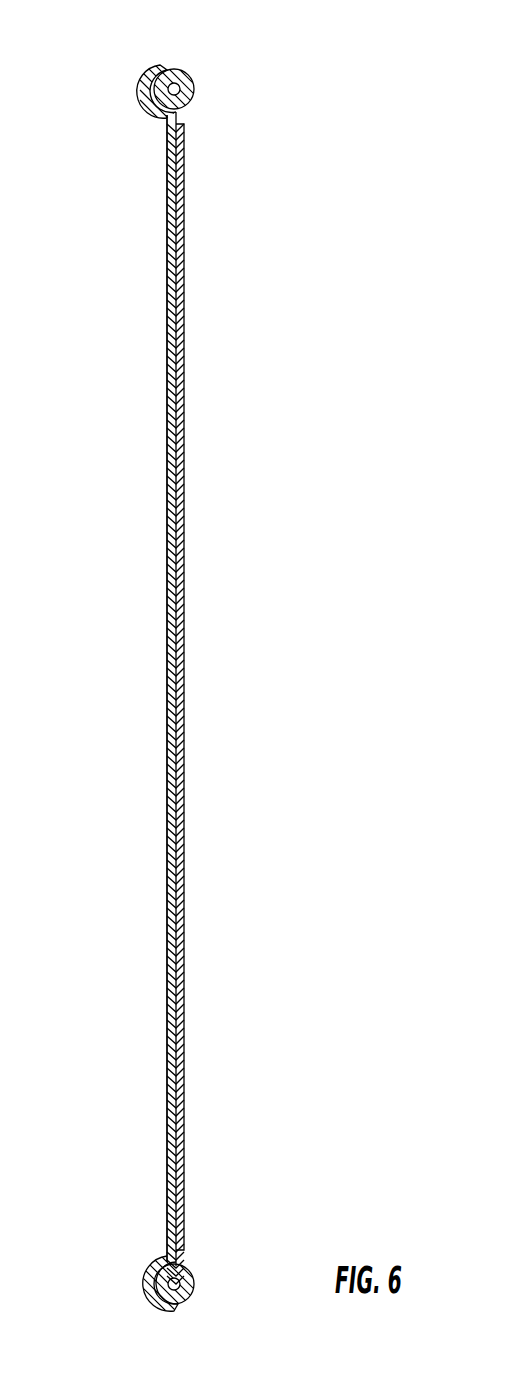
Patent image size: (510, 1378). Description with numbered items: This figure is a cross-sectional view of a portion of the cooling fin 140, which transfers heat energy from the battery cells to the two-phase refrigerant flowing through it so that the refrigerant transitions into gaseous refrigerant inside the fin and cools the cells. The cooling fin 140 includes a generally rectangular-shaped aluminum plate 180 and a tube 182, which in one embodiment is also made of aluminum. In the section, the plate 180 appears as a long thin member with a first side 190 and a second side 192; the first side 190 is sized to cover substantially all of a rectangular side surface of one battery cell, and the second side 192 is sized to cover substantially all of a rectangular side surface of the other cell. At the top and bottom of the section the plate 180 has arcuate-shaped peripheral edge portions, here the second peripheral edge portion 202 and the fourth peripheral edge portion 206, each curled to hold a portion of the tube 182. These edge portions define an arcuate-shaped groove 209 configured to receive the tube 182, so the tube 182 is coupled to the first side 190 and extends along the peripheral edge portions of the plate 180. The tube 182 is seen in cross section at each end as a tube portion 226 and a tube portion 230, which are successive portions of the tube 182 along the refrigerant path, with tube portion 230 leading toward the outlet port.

The cooling fin 140 is at (298, 98).
The generally rectangular-shaped aluminum plate 180 is at (168, 185).
The tube 182 is at (187, 68).
The first side 190 is at (181, 118).
The second side 192 is at (167, 128).
The second peripheral edge portion 202 is at (151, 88).
The fourth peripheral edge portion 206 is at (154, 1300).
The arcuate-shaped groove 209 is at (180, 1269).
The tube portion 226 is at (194, 90).
The tube portion 230 is at (194, 1286).